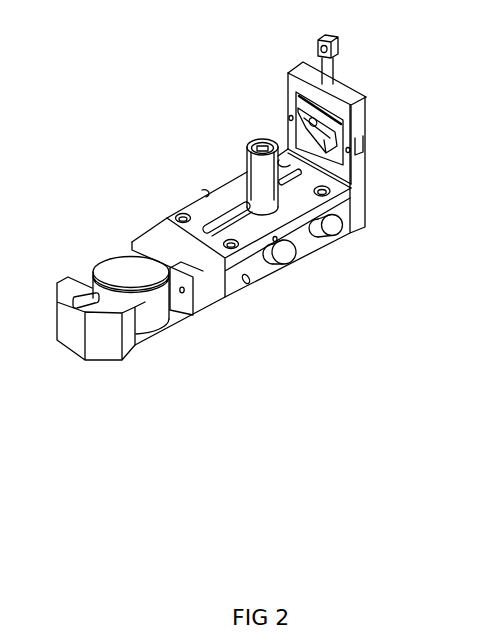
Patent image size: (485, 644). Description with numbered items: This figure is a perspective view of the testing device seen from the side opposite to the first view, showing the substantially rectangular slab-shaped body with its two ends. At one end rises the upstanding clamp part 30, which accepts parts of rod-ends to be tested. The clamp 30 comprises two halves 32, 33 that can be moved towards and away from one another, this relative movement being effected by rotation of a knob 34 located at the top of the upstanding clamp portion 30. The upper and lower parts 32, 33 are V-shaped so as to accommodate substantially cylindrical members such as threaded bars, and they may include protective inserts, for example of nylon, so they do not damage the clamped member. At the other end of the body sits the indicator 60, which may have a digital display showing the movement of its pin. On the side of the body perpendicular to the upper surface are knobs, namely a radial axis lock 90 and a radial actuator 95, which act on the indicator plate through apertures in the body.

The upstanding clamp part 30 is at (256, 90).
The upper clamp half 32 is at (334, 161).
The lower clamp half 33 is at (341, 122).
The knob 34 is at (346, 47).
The indicator 60 is at (107, 250).
The radial axis lock 90 is at (354, 236).
The radial actuator 95 is at (306, 261).